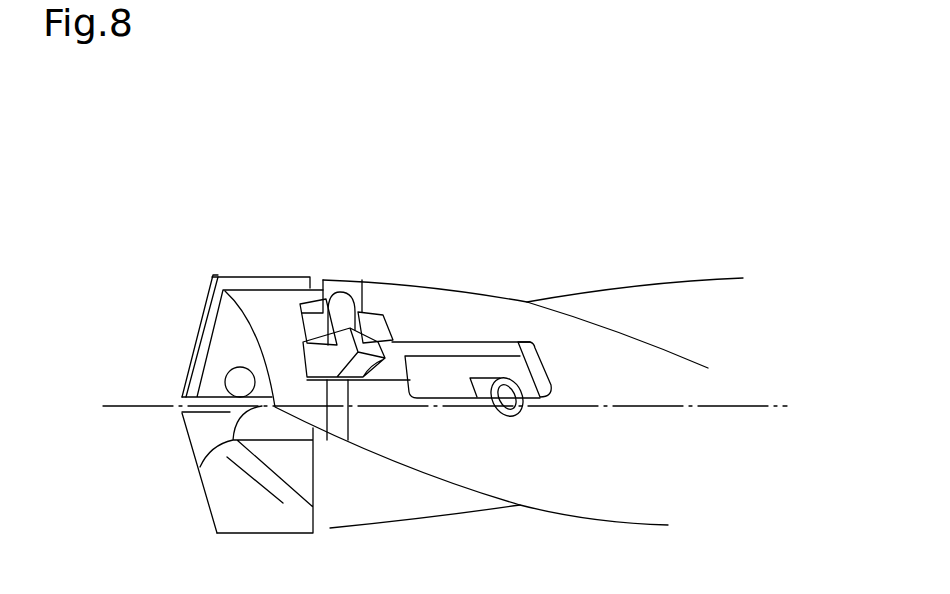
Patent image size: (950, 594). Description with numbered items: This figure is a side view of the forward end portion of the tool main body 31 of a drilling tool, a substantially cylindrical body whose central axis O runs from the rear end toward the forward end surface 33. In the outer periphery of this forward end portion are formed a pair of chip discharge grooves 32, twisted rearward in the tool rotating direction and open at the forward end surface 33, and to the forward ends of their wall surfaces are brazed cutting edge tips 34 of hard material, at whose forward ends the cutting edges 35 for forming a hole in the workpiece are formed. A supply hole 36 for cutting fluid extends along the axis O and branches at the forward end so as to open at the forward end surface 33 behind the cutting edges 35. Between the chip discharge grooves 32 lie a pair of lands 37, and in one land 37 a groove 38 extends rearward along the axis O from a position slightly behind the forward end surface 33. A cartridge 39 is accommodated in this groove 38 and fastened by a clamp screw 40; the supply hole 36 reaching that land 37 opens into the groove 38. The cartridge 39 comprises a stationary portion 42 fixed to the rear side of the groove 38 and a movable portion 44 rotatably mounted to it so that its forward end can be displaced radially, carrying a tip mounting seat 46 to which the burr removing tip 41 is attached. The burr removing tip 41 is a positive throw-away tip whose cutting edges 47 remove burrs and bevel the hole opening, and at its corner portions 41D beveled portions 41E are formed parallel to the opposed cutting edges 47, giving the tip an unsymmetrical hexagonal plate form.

The axis O is at (735, 407).
The tool main body 31 is at (610, 258).
The chip discharge grooves 32 is at (657, 298).
The forward end surface 33 is at (222, 357).
The cutting edge tips 34 is at (237, 273).
The cutting edges 35 is at (200, 313).
The supply hole 36 is at (237, 383).
The lands 37 is at (575, 497).
The groove 38 is at (538, 367).
The cartridge 39 is at (475, 330).
The clamp screw 40 is at (525, 405).
The burr removing tip 41 is at (298, 300).
The corner portions 41D is at (377, 318).
The beveled portions 41E is at (363, 290).
The stationary portion 42 is at (500, 363).
The movable portion 44 is at (443, 350).
The tip mounting seat 46 is at (350, 368).
The cutting edges (burr removing edges) 47 is at (342, 313).